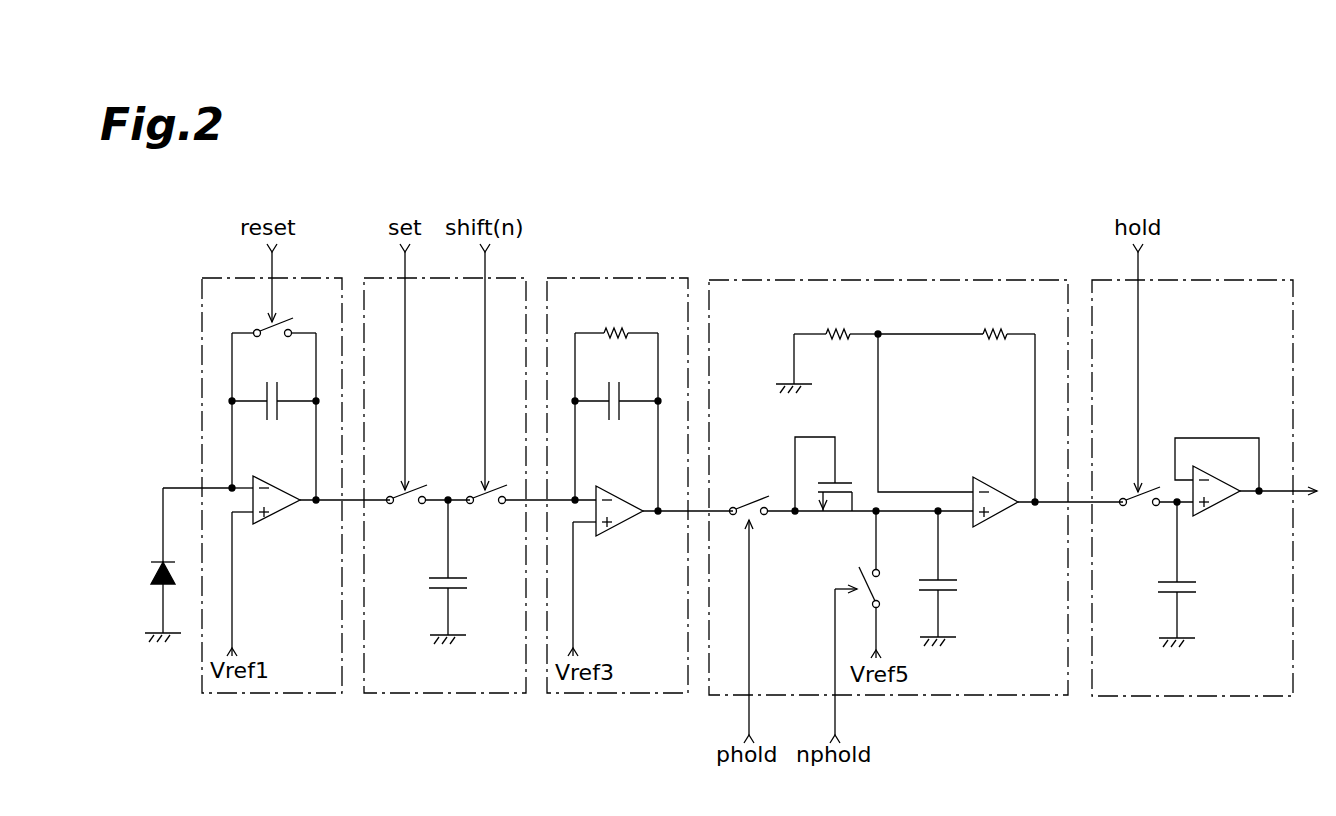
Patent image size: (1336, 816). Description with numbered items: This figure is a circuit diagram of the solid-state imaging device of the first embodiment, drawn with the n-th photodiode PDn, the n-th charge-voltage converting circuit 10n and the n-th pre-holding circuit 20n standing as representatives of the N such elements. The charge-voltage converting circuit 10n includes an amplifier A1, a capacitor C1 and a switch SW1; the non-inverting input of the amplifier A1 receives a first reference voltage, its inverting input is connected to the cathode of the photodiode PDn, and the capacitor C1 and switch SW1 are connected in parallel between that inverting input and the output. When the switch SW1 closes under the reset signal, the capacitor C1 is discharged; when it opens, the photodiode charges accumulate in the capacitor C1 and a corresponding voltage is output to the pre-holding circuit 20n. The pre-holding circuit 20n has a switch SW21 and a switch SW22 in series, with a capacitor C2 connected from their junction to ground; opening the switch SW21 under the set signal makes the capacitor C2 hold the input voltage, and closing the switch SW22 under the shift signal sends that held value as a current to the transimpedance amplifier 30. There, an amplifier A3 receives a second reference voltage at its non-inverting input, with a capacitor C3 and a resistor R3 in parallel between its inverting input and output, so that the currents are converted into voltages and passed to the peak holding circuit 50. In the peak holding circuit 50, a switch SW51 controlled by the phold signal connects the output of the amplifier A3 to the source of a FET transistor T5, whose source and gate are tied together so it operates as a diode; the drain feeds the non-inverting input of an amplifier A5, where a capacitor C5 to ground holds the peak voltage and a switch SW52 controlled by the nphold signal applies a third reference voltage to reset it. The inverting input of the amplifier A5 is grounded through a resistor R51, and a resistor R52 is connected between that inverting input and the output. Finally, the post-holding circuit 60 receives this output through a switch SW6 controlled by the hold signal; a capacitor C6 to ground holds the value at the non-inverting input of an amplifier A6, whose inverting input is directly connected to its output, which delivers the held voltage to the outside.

The charge-voltage converting circuit 10n is at (302, 693).
The pre-holding circuit 20n is at (475, 693).
The transimpedance amplifier 30 is at (655, 693).
The peak holding circuit 50 is at (1015, 695).
The post-holding circuit 60 is at (1250, 696).
The photodiode PDn is at (158, 570).
The switch SW1 is at (274, 344).
The capacitor C1 is at (274, 414).
The amplifier A1 is at (308, 566).
The switch SW21 is at (423, 509).
The switch SW22 is at (525, 509).
The capacitor C2 is at (459, 570).
The resistor R3 is at (616, 349).
The capacitor C3 is at (616, 415).
The amplifier A3 is at (650, 571).
The switch SW51 is at (827, 493).
The FET transistor T5 is at (822, 487).
The switch SW52 is at (832, 583).
The resistor R51 is at (827, 361).
The resistor R52 is at (955, 415).
The capacitor C5 is at (949, 577).
The amplifier A5 is at (1000, 438).
The switch SW6 is at (1153, 511).
The capacitor C6 is at (1189, 573).
The amplifier A6 is at (1246, 485).